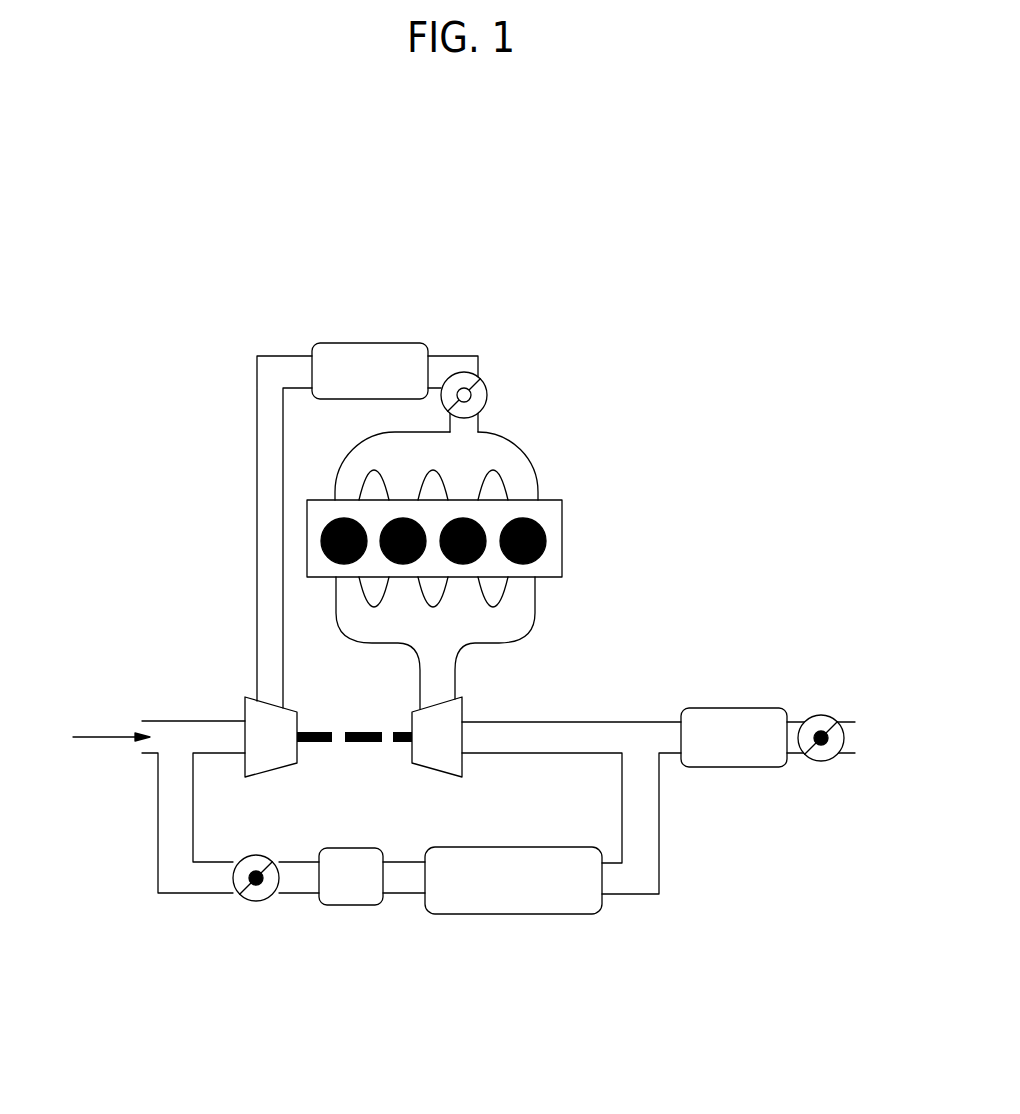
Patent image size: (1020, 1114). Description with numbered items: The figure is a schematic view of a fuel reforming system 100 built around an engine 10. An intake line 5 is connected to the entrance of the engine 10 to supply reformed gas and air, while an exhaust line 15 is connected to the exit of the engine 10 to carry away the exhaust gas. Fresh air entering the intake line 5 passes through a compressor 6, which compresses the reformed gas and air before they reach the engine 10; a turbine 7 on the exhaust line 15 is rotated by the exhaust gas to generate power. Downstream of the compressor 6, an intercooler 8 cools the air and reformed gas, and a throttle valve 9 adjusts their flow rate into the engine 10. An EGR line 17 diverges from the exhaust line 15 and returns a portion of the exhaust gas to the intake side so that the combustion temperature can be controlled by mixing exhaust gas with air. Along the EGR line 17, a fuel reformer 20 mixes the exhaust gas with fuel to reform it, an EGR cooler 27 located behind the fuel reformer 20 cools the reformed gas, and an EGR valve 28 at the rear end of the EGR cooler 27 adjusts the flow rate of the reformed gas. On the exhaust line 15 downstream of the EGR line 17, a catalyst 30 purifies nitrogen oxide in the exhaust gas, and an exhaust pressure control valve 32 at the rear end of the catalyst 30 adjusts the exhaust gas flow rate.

The fuel reforming system 100 is at (436, 248).
The intake line 5 is at (165, 721).
The compressor 6 is at (245, 710).
The turbine 7 is at (463, 711).
The intercooler 8 is at (369, 343).
The throttle valve 9 is at (487, 395).
The engine 10 is at (546, 464).
The exhaust line 15 is at (572, 722).
The EGR line 17 is at (659, 824).
The fuel reformer 20 is at (512, 915).
The EGR cooler 27 is at (350, 906).
The EGR valve 28 is at (255, 902).
The catalyst 30 is at (734, 708).
The exhaust pressure control valve 32 is at (821, 715).